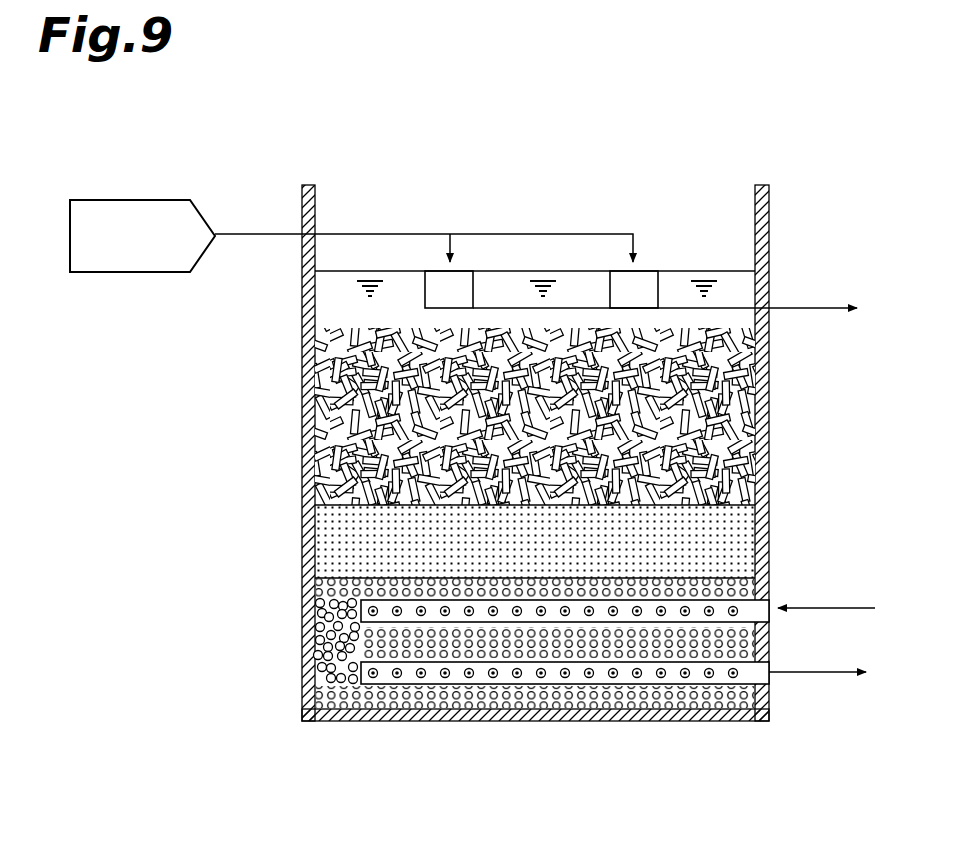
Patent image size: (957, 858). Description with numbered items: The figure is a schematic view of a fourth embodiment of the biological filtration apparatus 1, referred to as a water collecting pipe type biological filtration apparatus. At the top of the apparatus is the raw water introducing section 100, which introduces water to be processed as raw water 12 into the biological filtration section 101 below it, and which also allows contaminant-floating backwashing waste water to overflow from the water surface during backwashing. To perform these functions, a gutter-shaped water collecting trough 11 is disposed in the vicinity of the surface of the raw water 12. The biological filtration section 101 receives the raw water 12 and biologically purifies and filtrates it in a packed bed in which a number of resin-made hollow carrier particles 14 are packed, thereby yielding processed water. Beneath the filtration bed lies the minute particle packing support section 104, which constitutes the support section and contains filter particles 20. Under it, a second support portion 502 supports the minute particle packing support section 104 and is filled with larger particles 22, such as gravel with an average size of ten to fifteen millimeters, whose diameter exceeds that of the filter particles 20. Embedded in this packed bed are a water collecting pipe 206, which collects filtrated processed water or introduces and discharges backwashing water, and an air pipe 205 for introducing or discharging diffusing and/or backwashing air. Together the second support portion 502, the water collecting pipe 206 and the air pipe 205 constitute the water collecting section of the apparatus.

The biological filtration apparatus 1 is at (778, 411).
The water collecting trough 11 is at (437, 296).
The raw water 12 is at (322, 320).
The resin-made hollow carrier particles 14 is at (318, 460).
The filter particles 20 is at (742, 515).
The larger particles 22 is at (769, 638).
The raw water introducing section 100 is at (302, 347).
The biological filtration section 101 is at (302, 505).
The minute particle packing support section 104 is at (302, 578).
The second support portion 502 is at (302, 710).
The air pipe 205 is at (820, 605).
The water collecting pipe 206 is at (810, 678).